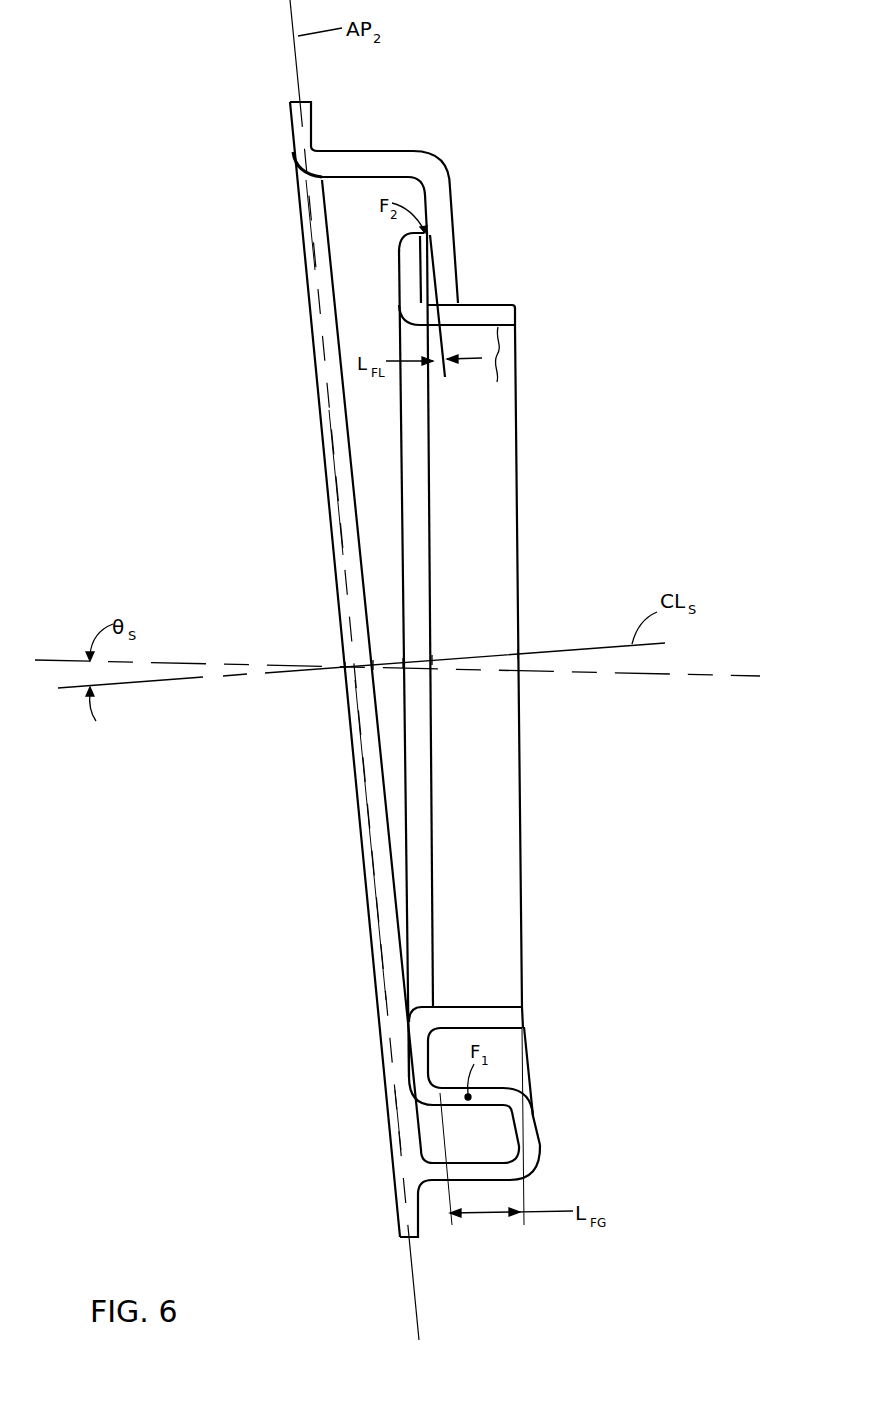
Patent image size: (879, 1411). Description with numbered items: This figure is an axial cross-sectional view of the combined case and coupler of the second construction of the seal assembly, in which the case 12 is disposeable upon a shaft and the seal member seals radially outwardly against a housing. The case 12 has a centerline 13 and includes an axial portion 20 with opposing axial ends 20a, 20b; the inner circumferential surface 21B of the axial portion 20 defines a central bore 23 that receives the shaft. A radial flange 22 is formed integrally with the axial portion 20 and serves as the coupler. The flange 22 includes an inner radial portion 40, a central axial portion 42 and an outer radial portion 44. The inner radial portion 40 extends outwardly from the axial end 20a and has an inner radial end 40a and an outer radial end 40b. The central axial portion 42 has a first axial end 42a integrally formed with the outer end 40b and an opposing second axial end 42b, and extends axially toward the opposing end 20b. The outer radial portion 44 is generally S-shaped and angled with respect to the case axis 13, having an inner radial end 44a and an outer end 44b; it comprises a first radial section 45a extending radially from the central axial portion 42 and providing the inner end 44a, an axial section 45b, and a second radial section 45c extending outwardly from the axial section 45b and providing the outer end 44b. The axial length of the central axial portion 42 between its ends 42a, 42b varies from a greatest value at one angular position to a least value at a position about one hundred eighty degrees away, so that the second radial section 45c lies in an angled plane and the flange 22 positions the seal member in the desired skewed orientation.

The case 12 is at (562, 350).
The centerline 13 is at (724, 670).
The axial portion 20 is at (467, 639).
The axial end 20a is at (423, 313).
The axial end 20b is at (515, 316).
The inner circumferential surface 21B is at (497, 373).
The radial flange 22 is at (490, 188).
The central bore 23 is at (490, 458).
The inner radial portion 40 is at (396, 272).
The inner radial end 40a is at (410, 1028).
The outer radial end 40b is at (418, 1070).
The central axial portion 42 is at (406, 231).
The first axial end 42a is at (415, 1095).
The second axial end 42b is at (513, 1090).
The outer radial portion 44 is at (447, 180).
The inner radial end 44a is at (533, 1107).
The outer end 44b is at (398, 1233).
The first radial section 45a is at (533, 1130).
The axial section 45b is at (478, 1162).
The second radial section 45c is at (400, 1198).